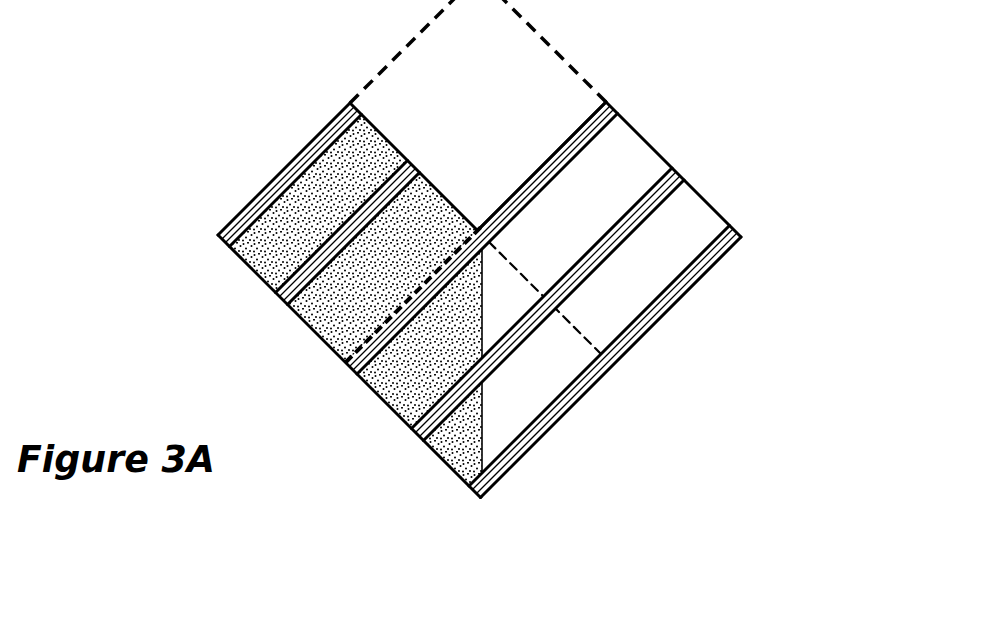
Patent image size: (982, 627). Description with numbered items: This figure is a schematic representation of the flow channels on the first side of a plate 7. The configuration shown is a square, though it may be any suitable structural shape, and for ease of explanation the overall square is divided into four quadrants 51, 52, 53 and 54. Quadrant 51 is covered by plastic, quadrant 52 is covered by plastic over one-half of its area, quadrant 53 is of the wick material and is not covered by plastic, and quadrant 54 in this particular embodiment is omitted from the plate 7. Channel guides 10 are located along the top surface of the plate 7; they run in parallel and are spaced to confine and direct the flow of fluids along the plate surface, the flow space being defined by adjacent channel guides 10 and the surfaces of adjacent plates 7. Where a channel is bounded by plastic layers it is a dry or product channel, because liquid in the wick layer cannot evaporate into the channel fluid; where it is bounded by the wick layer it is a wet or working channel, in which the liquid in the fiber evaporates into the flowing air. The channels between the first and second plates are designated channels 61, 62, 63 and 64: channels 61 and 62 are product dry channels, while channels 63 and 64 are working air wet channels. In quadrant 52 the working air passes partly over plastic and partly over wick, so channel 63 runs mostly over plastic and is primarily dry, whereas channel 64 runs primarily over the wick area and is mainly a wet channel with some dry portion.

The plate 7 is at (360, 72).
The channel guides 10 is at (462, 345).
The quadrant 51 is at (340, 216).
The quadrant 52 is at (498, 337).
The quadrant 53 is at (621, 219).
The quadrant 54 is at (502, 111).
The product dry channel 61 is at (278, 282).
The product dry channel 62 is at (352, 344).
The working air wet channel 63 is at (625, 152).
The working air wet channel 64 is at (712, 210).